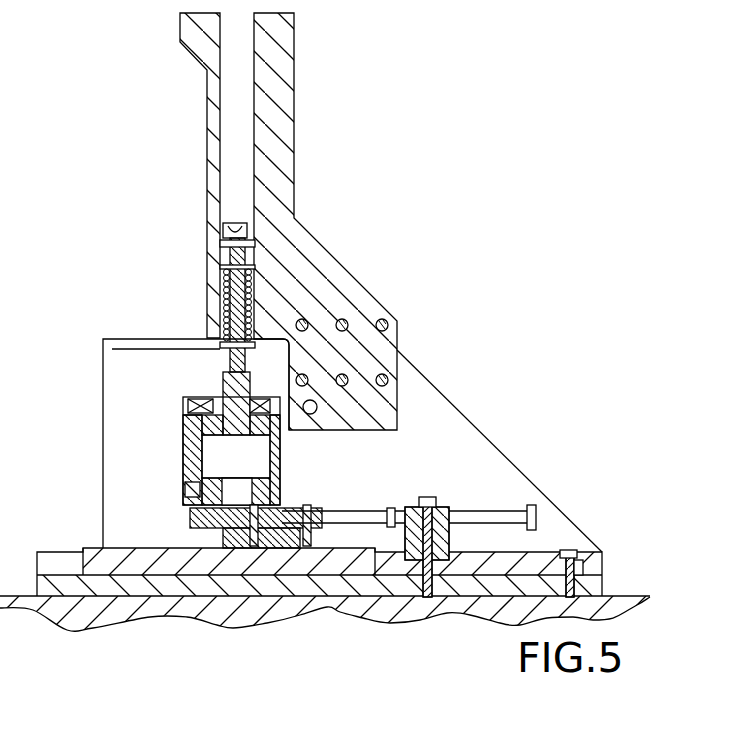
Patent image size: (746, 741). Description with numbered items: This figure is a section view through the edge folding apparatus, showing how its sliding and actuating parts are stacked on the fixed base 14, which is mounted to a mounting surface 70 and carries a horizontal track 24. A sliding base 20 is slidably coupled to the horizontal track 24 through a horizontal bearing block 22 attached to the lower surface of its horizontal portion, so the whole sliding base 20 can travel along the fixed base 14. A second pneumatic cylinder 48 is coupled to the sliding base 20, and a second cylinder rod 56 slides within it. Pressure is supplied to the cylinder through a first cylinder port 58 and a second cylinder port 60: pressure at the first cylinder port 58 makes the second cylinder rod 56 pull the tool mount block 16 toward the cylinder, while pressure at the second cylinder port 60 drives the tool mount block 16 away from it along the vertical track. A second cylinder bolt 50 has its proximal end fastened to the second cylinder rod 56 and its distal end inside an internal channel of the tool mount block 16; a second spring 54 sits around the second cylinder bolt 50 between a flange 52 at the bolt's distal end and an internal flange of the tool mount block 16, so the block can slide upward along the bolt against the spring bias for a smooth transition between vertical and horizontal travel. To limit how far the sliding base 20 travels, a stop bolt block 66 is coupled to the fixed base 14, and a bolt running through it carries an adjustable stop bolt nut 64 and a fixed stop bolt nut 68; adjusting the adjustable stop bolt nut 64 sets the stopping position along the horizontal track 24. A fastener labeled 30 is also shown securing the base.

The fixed base 14 is at (104, 372).
The tool mount block 16 is at (292, 130).
The sliding base 20 is at (292, 508).
The horizontal bearing block 22 is at (215, 543).
The horizontal track 24 is at (104, 548).
The bolt 30 is at (583, 565).
The second pneumatic cylinder 48 is at (185, 442).
The second cylinder bolt 50 is at (233, 232).
The flange 52 is at (222, 243).
The second spring 54 is at (225, 296).
The second cylinder rod 56 is at (232, 392).
The first cylinder port 58 is at (190, 408).
The second cylinder port 60 is at (190, 493).
The adjustable stop bolt nut 64 is at (532, 512).
The stop bolt block 66 is at (449, 508).
The fixed stop bolt nut 68 is at (418, 505).
The mounting surface 70 is at (115, 626).